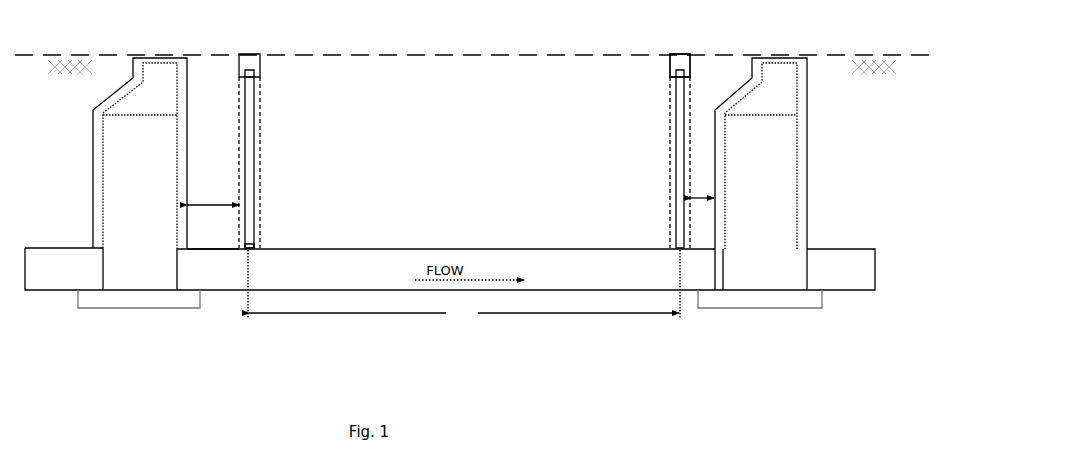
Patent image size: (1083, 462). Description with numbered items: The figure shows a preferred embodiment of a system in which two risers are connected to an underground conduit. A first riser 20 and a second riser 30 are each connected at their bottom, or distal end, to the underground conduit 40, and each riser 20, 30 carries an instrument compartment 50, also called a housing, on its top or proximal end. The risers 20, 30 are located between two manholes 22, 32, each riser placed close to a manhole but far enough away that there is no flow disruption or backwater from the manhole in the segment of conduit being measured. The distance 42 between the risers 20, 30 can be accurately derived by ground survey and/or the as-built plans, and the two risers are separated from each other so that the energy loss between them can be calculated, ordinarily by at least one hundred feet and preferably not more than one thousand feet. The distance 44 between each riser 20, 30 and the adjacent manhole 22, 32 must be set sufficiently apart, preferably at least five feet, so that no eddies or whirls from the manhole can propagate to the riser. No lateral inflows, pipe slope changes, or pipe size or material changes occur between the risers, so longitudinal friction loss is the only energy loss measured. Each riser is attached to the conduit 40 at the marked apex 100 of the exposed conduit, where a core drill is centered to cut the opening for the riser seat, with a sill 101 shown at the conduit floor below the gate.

The first riser 20 is at (261, 172).
The second riser 30 is at (669, 203).
The manhole 22 is at (158, 60).
The manhole 32 is at (773, 55).
The underground conduit 40 is at (592, 288).
The distance between the risers 42 is at (464, 288).
The distance between riser and adjacent manhole 44 is at (222, 206).
The instrument compartment 50 is at (680, 51).
The apex 100 is at (252, 252).
The channel floor 101 is at (179, 247).